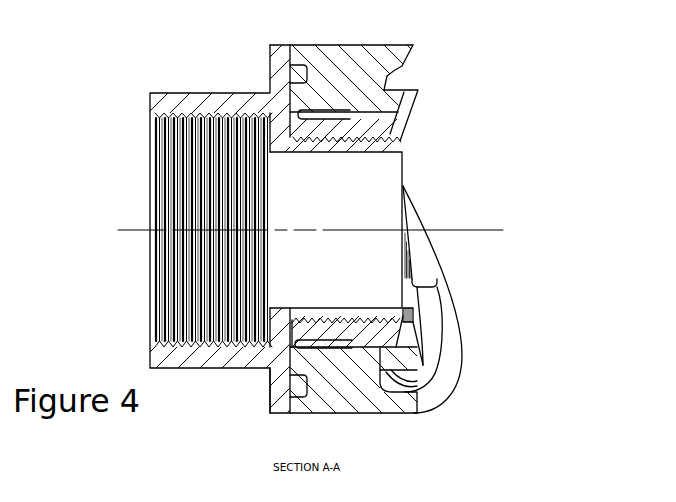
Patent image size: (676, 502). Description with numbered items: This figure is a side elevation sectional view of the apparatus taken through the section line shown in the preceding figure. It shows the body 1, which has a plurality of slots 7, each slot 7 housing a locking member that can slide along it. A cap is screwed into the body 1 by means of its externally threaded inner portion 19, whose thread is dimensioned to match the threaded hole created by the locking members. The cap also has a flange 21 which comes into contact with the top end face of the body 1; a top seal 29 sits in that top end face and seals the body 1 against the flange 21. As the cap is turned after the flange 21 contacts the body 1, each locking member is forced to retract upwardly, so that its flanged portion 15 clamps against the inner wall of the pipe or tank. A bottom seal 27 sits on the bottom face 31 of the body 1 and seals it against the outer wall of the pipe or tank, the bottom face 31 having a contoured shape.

The body 1 is at (380, 413).
The slot 7 is at (292, 78).
The flanged portion 15 is at (412, 112).
The threaded inner portion 19 is at (403, 168).
The flange 21 is at (277, 413).
The bottom seal 27 is at (397, 80).
The top seal 29 is at (323, 118).
The bottom face 31 is at (450, 377).